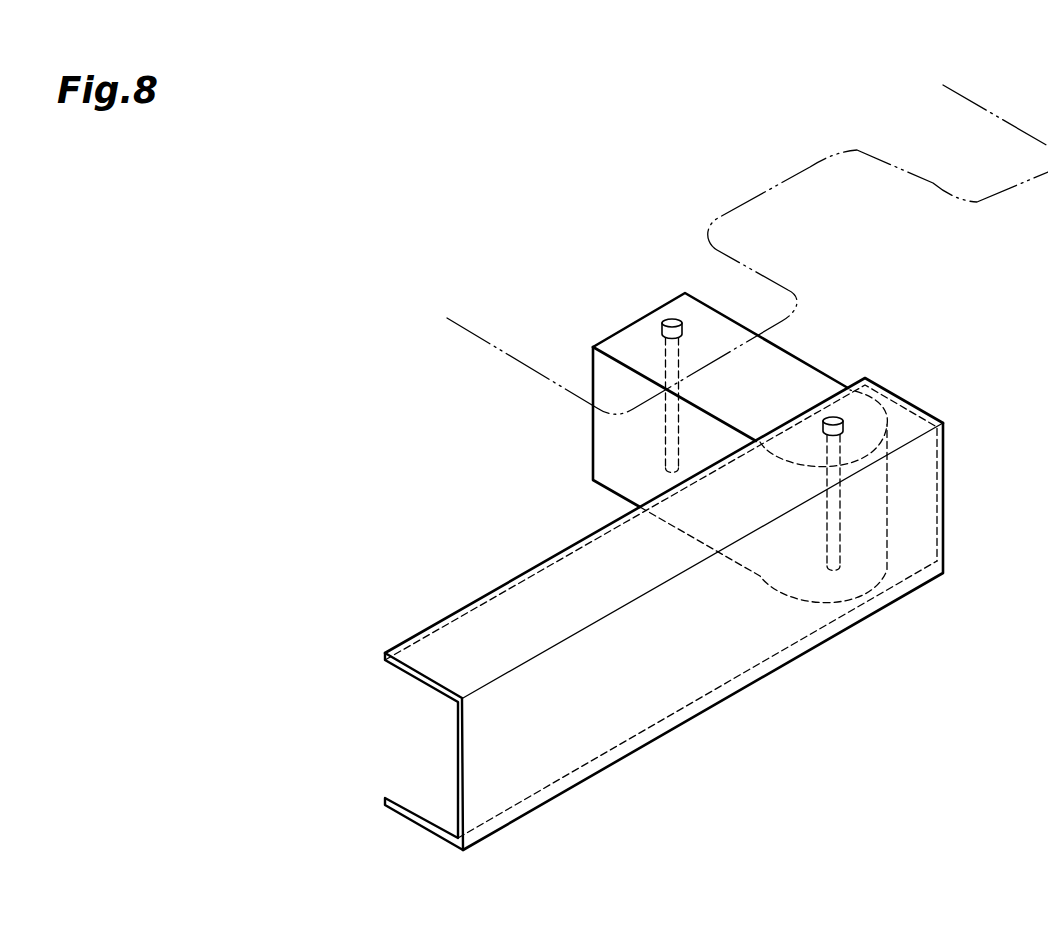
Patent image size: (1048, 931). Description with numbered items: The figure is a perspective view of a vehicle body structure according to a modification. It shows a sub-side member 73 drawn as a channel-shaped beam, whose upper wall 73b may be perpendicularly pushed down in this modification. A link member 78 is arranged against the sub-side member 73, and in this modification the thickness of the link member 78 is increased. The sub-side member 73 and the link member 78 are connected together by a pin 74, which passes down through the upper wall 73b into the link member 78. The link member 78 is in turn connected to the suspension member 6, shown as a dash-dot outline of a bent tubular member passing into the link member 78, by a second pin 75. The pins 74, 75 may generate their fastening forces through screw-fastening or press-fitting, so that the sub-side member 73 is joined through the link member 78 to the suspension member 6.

The suspension member 6 is at (472, 335).
The sub-side member 73 is at (655, 614).
The upper wall 73b is at (706, 650).
The pin 74 is at (842, 513).
The pin 75 is at (664, 447).
The link member 78 is at (787, 374).